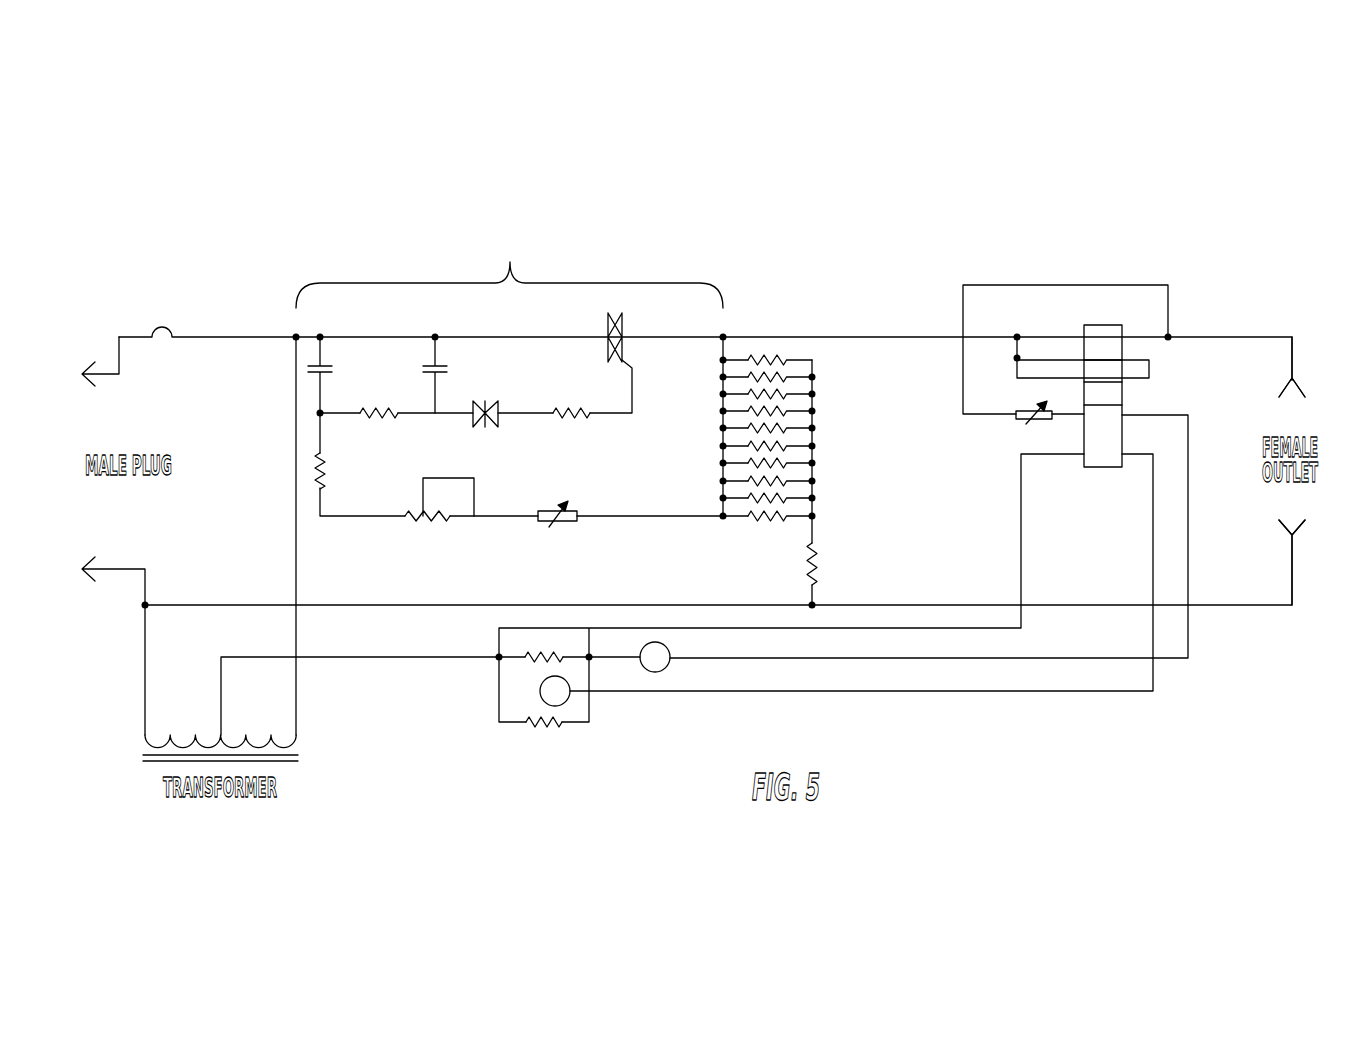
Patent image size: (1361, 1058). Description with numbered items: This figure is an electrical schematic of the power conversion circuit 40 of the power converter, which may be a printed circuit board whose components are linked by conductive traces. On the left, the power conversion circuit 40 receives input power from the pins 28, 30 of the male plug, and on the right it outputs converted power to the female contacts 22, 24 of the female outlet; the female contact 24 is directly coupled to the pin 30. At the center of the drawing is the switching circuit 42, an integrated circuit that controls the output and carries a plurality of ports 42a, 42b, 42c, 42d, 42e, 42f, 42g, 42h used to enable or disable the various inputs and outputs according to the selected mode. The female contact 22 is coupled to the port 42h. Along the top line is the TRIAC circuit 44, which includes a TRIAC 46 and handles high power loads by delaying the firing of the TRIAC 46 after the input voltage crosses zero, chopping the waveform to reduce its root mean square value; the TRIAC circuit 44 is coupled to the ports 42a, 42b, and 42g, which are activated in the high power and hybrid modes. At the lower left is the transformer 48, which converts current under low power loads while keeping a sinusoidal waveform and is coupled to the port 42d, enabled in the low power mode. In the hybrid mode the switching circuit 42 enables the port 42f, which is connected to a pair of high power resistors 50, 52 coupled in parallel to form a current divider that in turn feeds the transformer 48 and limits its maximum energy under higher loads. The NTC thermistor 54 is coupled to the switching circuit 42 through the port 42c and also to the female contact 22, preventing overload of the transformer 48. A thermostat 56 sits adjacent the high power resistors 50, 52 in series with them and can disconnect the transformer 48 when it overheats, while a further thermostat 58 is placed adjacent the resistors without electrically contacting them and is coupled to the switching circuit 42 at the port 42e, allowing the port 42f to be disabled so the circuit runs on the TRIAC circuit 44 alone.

The female contact 22 is at (1292, 368).
The female contact 24 is at (1292, 565).
The pin 28 is at (103, 372).
The pin 30 is at (110, 569).
The power conversion circuit 40 is at (757, 231).
The switching circuit 42 is at (1115, 325).
The port 42a is at (1084, 330).
The port 42b is at (1084, 378).
The port 42c is at (1084, 421).
The port 42d is at (1084, 465).
The port 42e is at (1120, 460).
The port 42f is at (1122, 412).
The port 42g is at (1122, 373).
The port 42h is at (1122, 332).
The TRIAC circuit 44 is at (509, 380).
The TRIAC 46 is at (614, 312).
The transformer 48 is at (296, 738).
The high power resistor 50 is at (555, 725).
The high power resistor 52 is at (540, 660).
The NTC thermistor 54 is at (1016, 416).
The thermostat 56 is at (655, 642).
The thermostat 58 is at (562, 680).